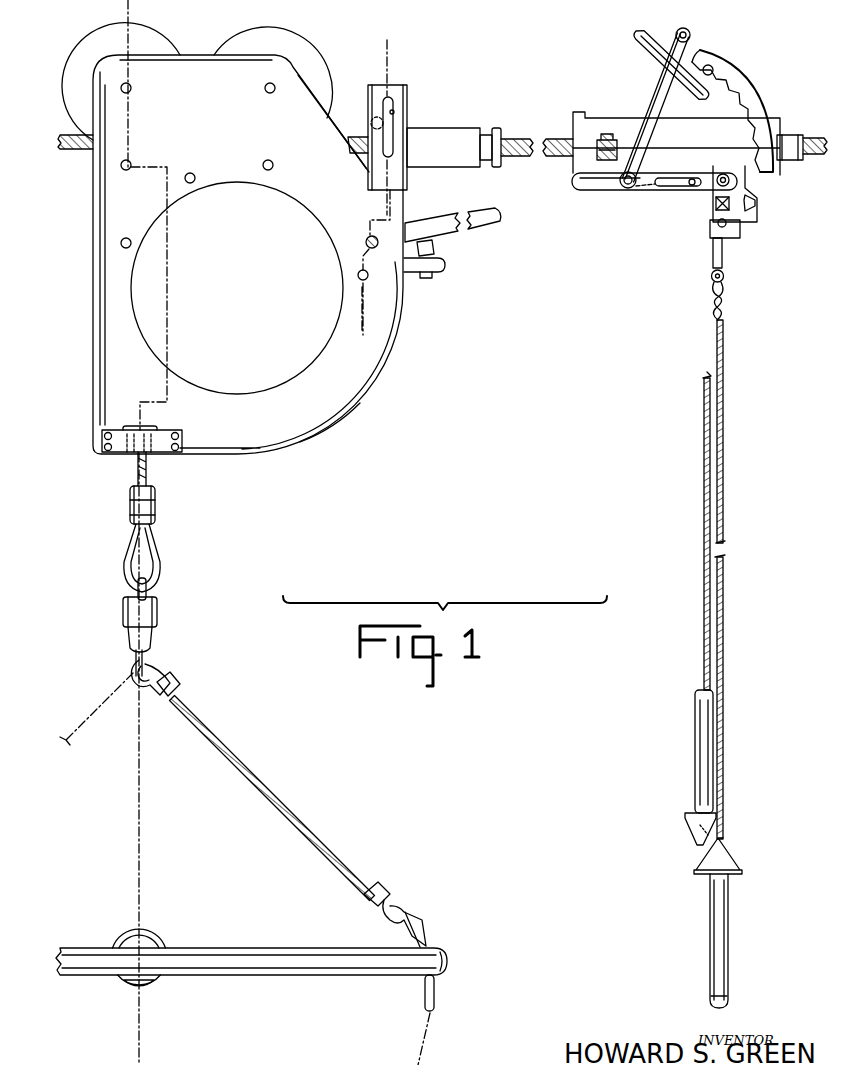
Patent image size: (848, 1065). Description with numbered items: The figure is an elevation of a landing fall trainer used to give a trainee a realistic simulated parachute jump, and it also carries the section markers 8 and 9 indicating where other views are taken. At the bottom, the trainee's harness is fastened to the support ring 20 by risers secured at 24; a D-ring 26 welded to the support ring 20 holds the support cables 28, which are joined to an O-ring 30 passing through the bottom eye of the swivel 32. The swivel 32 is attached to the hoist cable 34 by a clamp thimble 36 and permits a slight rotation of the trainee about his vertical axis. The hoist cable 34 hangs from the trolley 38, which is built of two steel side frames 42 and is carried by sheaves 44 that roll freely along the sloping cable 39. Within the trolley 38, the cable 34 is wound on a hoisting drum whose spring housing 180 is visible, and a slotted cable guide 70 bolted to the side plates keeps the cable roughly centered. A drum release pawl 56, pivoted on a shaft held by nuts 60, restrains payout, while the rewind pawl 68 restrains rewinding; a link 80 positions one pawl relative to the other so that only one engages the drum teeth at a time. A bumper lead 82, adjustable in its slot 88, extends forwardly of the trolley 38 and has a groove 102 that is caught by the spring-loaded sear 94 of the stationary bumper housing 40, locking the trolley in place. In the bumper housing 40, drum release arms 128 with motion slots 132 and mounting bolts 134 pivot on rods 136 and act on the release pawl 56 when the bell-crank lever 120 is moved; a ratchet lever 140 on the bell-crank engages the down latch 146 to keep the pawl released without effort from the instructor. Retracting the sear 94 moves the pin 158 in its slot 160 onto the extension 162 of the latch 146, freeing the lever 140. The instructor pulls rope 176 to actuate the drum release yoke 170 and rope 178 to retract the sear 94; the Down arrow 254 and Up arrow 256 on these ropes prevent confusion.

The section line 8- 8 is at (133, 12).
The section line 9- 9 is at (388, 48).
The support ring 20 is at (305, 948).
The riser securing point 24 is at (148, 991).
The D-ring 26 is at (160, 936).
The support cables 28 is at (302, 826).
The O-ring 30 is at (148, 661).
The swivel 32 is at (158, 613).
The hoist cable 34 is at (150, 485).
The clamp thimble 36 is at (163, 561).
The trolley 38 is at (414, 353).
The sloping cable 39 is at (527, 140).
The bumper housing 40 is at (617, 201).
The side frames 42 is at (333, 413).
The sheaves 44 is at (246, 38).
The drum release pawl 56 is at (443, 224).
The nuts 60 is at (366, 237).
The rewind pawl 68 is at (440, 268).
The slotted cable guide 70 is at (148, 431).
The link 80 is at (432, 248).
The bumper lead 82 is at (455, 135).
The slot 88 is at (394, 110).
The sear 94 is at (723, 258).
The groove 102 is at (493, 128).
The bell-crank lever 120 is at (660, 101).
The drum release arms 128 is at (578, 187).
The motion slots 132 is at (705, 173).
The mounting bolts 134 is at (665, 189).
The rods 136 is at (724, 175).
The drum release ratchet lever 140 is at (736, 86).
The down latch 146 is at (758, 214).
The pin 158 is at (715, 204).
The slot 160 is at (739, 232).
The extension 162 is at (712, 222).
The drum release yoke 170 is at (696, 52).
The rope 176 is at (703, 596).
The trolley release control rope 178 is at (724, 604).
The spring housing 180 is at (232, 197).
The Down arrow 254 is at (703, 774).
The Up arrow 256 is at (720, 931).